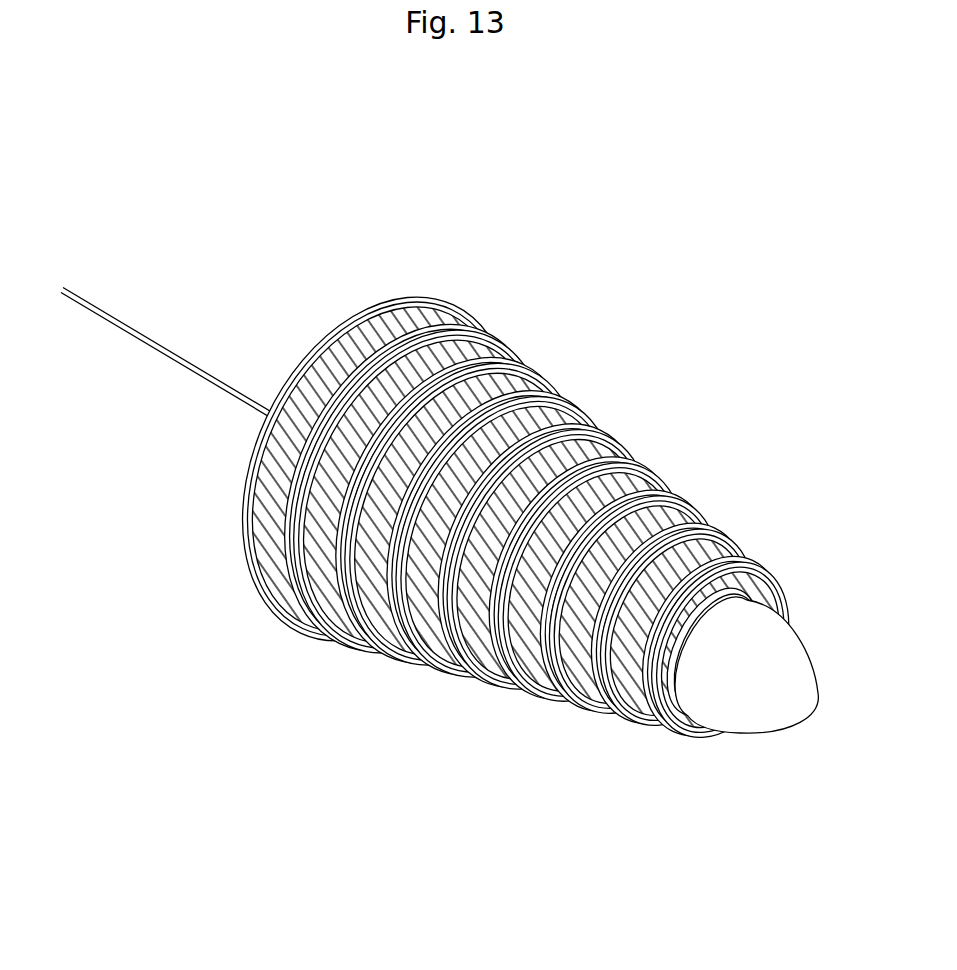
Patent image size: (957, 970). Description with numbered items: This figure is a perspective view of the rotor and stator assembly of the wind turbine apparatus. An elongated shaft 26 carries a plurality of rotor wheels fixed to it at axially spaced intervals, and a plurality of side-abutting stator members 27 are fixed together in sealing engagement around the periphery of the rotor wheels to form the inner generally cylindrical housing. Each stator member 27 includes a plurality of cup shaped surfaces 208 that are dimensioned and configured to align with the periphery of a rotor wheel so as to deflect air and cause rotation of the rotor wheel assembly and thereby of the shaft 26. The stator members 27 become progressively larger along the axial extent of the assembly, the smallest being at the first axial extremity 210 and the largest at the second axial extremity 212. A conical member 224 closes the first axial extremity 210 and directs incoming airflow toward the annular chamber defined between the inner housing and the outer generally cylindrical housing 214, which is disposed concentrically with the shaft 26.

The shaft 26 is at (218, 381).
The stator member 27 is at (496, 509).
The cup shaped surface 208 is at (496, 516).
The first axial extremity 210 is at (727, 585).
The second axial extremity 212 is at (240, 528).
The second or outer generally cylindrical housing 214 is at (496, 525).
The conical member 224 is at (743, 687).